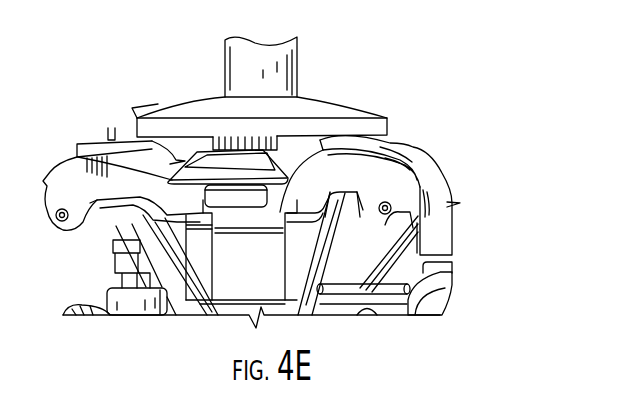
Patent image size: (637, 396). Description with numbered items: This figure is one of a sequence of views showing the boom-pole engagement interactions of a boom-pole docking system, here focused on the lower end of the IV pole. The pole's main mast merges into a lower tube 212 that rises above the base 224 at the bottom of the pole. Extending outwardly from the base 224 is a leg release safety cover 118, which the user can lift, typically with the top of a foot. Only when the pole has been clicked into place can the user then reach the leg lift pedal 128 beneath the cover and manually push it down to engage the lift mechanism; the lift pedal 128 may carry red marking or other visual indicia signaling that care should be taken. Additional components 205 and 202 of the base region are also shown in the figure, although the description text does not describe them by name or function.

The lower tube 212 is at (283, 73).
The base 224 is at (207, 114).
The leg release safety cover 118 is at (263, 163).
The leg lift pedal 128 is at (268, 194).
The arm 205 is at (428, 157).
The base foot 202 is at (437, 298).